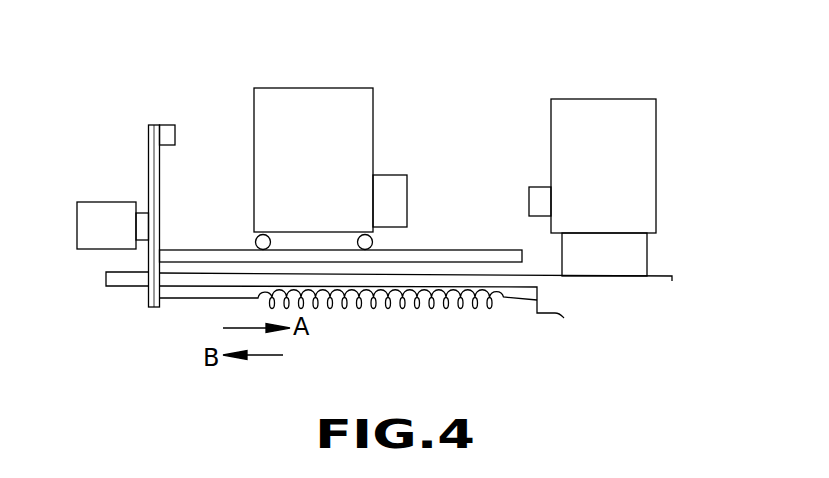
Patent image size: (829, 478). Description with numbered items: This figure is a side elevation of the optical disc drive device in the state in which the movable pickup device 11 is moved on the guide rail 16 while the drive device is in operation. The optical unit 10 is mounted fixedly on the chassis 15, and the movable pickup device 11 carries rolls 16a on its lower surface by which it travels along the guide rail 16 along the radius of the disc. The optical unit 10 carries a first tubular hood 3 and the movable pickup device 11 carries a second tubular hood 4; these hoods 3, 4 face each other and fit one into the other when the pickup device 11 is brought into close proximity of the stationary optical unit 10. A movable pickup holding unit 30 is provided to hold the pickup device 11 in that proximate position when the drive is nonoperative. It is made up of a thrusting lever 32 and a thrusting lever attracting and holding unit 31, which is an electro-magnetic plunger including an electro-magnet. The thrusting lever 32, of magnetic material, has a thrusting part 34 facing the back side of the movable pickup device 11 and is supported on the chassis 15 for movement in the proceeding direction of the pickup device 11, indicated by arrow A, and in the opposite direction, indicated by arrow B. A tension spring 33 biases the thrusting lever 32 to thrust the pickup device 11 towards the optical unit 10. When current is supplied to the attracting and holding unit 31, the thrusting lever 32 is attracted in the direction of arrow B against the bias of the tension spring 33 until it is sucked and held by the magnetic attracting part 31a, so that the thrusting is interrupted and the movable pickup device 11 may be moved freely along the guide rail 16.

The first tubular hood 3 is at (531, 190).
The second tubular hood 4 is at (400, 183).
The optical unit 10 is at (598, 108).
The movable pickup device 11 is at (363, 120).
The chassis 15 is at (668, 288).
The guide rail 16 is at (470, 250).
The rolls 16a is at (257, 238).
The movable pickup holding unit 30 is at (115, 120).
The thrusting lever attracting and holding unit 31 is at (95, 250).
The magnetic attracting part 31a is at (147, 236).
The thrusting lever 32 is at (148, 168).
The tension spring 33 is at (347, 308).
The thrusting part 34 is at (170, 125).